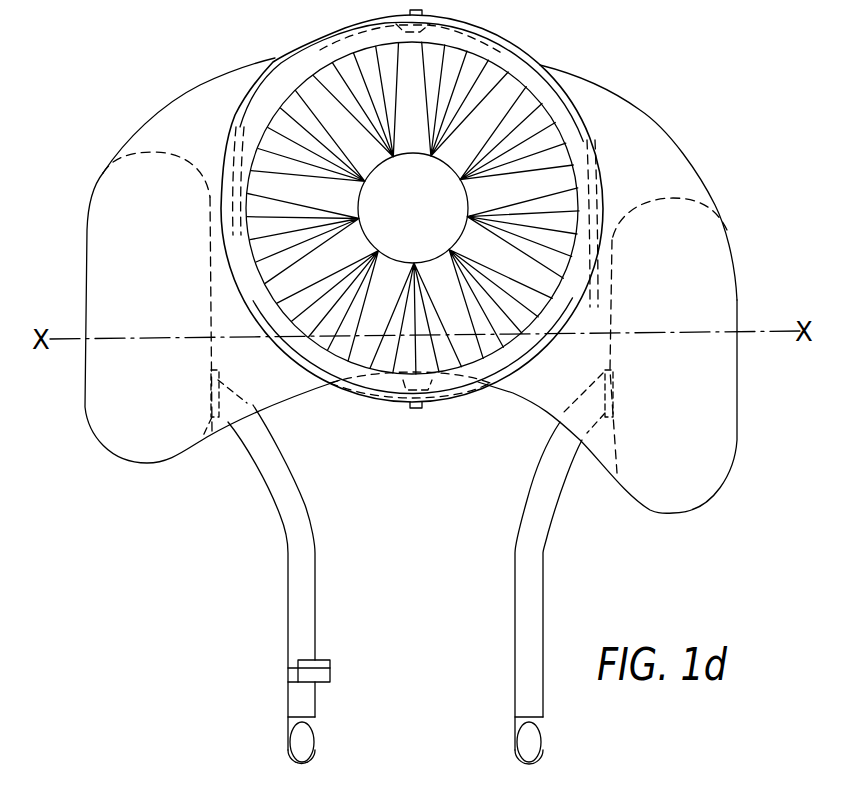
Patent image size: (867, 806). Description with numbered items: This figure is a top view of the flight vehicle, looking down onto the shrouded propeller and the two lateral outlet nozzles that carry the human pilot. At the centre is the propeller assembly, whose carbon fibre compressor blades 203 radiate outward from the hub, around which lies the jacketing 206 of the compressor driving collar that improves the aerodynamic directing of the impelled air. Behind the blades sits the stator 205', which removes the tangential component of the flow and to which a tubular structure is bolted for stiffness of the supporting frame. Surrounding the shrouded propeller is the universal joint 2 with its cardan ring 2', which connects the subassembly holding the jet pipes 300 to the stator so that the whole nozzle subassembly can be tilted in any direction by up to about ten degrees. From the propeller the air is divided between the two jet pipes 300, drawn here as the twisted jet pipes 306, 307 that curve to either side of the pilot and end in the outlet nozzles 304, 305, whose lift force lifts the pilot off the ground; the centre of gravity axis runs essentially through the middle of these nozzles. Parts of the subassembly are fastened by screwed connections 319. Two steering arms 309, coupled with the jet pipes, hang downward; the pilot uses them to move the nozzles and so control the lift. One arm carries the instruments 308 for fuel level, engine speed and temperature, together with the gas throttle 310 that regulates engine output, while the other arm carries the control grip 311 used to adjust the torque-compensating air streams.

The universal joint 2 is at (492, 204).
The cardan ring 2' is at (433, 207).
The compressor blades 203 is at (309, 87).
The stator 205' is at (378, 208).
The jacketing 206 is at (440, 237).
The jet pipe 300 is at (97, 200).
The outlet nozzle 304 is at (122, 245).
The outlet nozzle 305 is at (713, 455).
The twisted jet pipe 306 is at (201, 90).
The twisted jet pipe 307 is at (640, 143).
The instruments 308 is at (320, 674).
The steering arm 309 is at (290, 638).
The gas throttle 310 is at (295, 742).
The control grip 311 is at (530, 747).
The screwed connection 319 is at (211, 396).